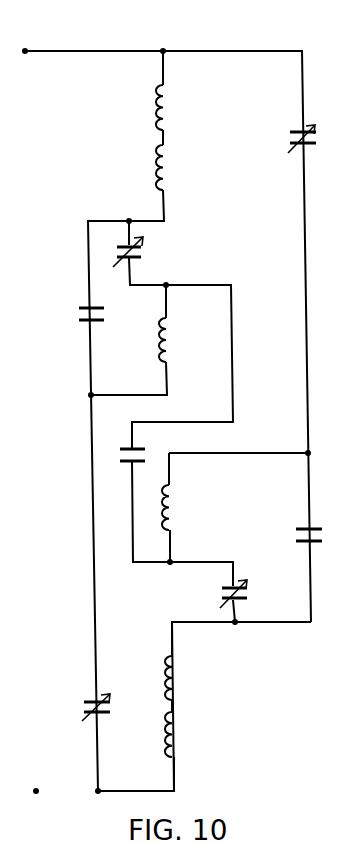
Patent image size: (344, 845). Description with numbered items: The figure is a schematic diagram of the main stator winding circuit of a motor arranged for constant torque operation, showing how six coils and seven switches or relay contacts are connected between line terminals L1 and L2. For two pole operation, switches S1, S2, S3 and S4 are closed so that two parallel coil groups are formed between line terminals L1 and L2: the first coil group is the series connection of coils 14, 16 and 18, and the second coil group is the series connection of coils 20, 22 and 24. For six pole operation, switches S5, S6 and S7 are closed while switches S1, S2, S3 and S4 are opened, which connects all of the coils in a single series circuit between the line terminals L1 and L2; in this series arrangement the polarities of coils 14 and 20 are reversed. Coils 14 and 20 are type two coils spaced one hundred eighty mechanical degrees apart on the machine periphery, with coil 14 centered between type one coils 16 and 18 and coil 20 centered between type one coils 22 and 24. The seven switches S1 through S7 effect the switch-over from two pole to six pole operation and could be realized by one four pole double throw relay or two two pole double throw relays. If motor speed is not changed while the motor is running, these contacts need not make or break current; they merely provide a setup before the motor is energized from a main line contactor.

The line terminal L1 is at (25, 51).
The line terminal L2 is at (36, 791).
The coil 14 is at (167, 333).
The coil 16 is at (163, 101).
The coil 18 is at (163, 162).
The coil 20 is at (171, 503).
The coil 22 is at (174, 671).
The coil 24 is at (175, 731).
The switch S1 is at (142, 250).
The switch S2 is at (110, 705).
The switch S3 is at (289, 136).
The switch S4 is at (221, 593).
The switch S5 is at (106, 316).
The switch S6 is at (146, 452).
The switch S7 is at (297, 535).